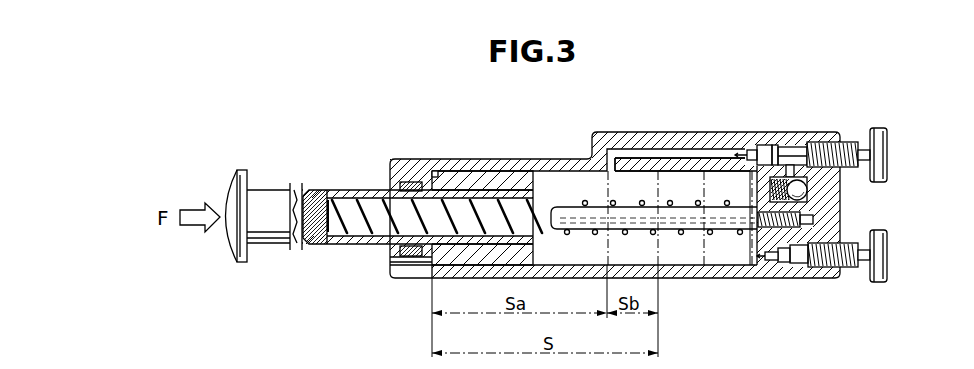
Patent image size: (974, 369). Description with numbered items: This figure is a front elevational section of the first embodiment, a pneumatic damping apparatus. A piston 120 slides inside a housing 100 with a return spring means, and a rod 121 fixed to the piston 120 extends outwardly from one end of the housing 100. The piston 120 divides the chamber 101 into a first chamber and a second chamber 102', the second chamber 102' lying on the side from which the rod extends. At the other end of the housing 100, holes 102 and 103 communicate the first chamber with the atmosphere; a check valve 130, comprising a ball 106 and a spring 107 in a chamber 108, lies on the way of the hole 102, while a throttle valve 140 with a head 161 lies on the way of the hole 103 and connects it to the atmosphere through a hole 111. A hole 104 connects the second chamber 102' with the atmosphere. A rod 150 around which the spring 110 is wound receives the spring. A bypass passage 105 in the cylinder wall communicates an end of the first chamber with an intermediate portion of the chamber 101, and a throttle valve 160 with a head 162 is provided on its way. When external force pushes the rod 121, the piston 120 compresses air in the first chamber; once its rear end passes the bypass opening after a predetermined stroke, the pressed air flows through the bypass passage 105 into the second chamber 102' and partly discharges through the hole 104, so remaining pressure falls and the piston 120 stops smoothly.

The housing 100 is at (604, 133).
The chamber 101 is at (733, 258).
The hole 102 is at (824, 207).
The second chamber 102' is at (444, 151).
The hole 103 is at (765, 262).
The hole 104 is at (402, 265).
The bypass passage 105 is at (640, 157).
The ball 106 is at (840, 150).
The spring 107 is at (790, 166).
The chamber 108 is at (812, 219).
The spring 110 is at (537, 210).
The hole 111 is at (790, 272).
The piston 120 is at (477, 183).
The rod 121 is at (308, 190).
The check valve 130 is at (800, 178).
The throttle valve 140 is at (807, 273).
The rod 150 is at (690, 233).
The throttle valve 160 is at (765, 146).
The head 161 is at (882, 147).
The head 162 is at (878, 257).